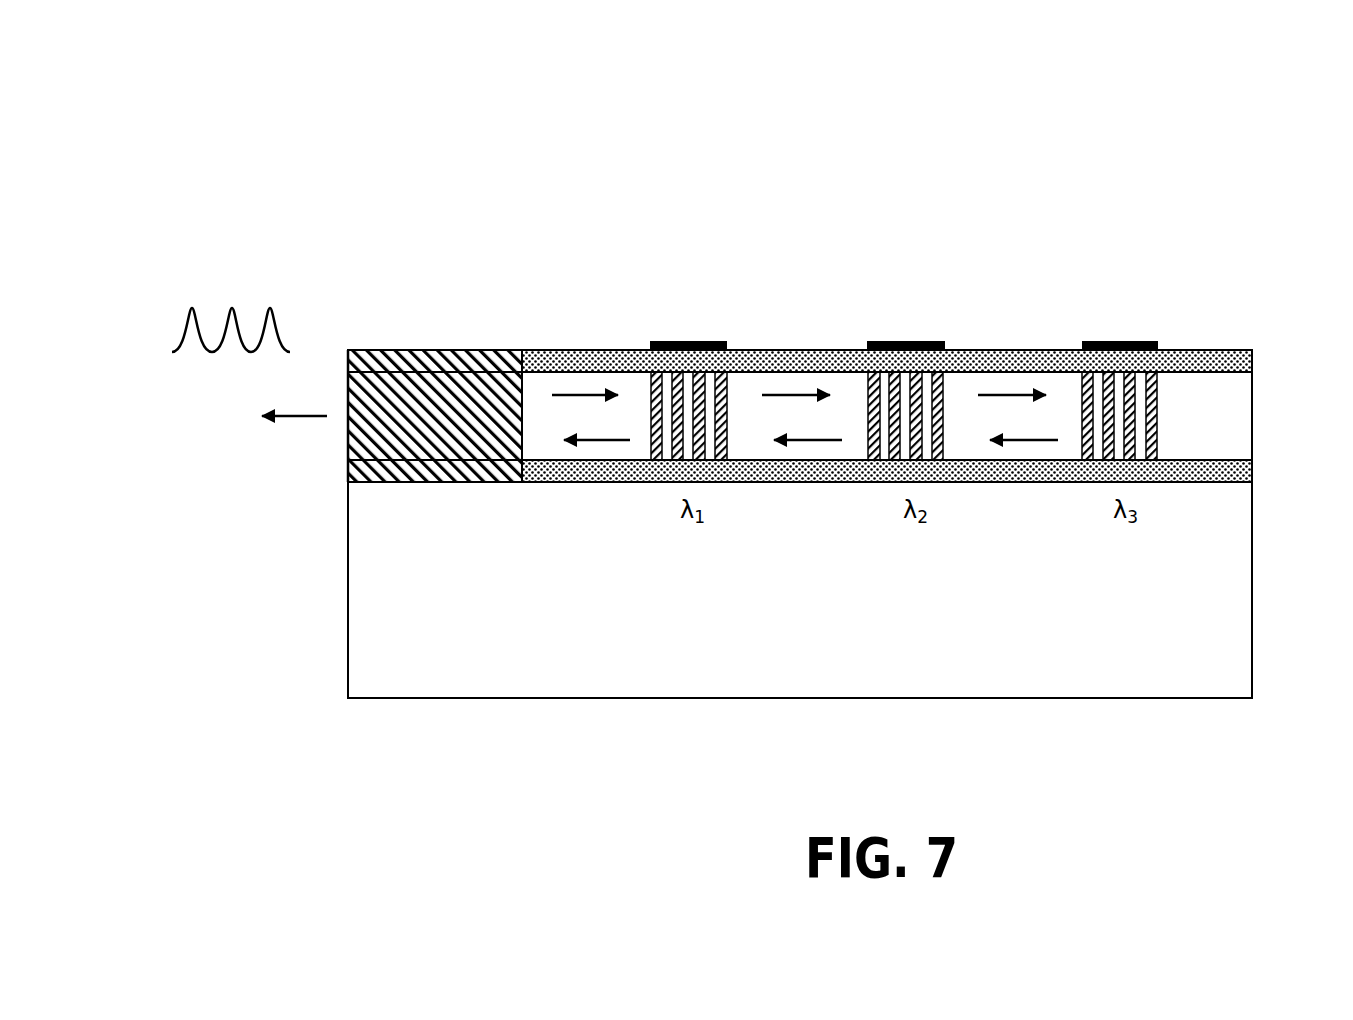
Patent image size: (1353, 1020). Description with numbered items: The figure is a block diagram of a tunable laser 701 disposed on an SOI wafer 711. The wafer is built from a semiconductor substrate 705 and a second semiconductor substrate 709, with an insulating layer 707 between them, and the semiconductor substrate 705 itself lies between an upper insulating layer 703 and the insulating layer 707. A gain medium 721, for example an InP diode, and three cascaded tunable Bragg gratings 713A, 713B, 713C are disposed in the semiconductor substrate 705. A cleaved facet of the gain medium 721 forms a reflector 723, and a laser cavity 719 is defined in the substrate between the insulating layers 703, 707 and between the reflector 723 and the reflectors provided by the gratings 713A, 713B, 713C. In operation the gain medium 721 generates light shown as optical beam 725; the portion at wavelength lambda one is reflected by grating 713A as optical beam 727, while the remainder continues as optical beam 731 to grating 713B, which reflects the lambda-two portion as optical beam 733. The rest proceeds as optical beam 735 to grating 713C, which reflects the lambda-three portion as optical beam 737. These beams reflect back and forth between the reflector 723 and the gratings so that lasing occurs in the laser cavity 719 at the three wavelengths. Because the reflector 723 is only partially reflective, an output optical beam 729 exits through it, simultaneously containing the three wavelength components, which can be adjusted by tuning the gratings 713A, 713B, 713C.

The tunable laser 701 is at (1253, 130).
The insulating layer 703 is at (1253, 356).
The semiconductor substrate 705 is at (1253, 410).
The insulating layer 707 is at (1253, 470).
The semiconductor substrate 709 is at (1253, 583).
The SOI wafer 711 is at (1245, 293).
The tunable Bragg grating 713A is at (690, 315).
The tunable Bragg grating 713B is at (898, 315).
The tunable Bragg grating 713C is at (1112, 315).
The laser cavity 719 is at (557, 452).
The gain medium 721 is at (425, 350).
The reflector 723 is at (343, 452).
The optical beam 725 is at (577, 383).
The optical beam 727 is at (607, 445).
The optical beam 729 is at (253, 432).
The optical beam 731 is at (800, 387).
The optical beam 733 is at (815, 445).
The optical beam 735 is at (1013, 385).
The optical beam 737 is at (1015, 445).